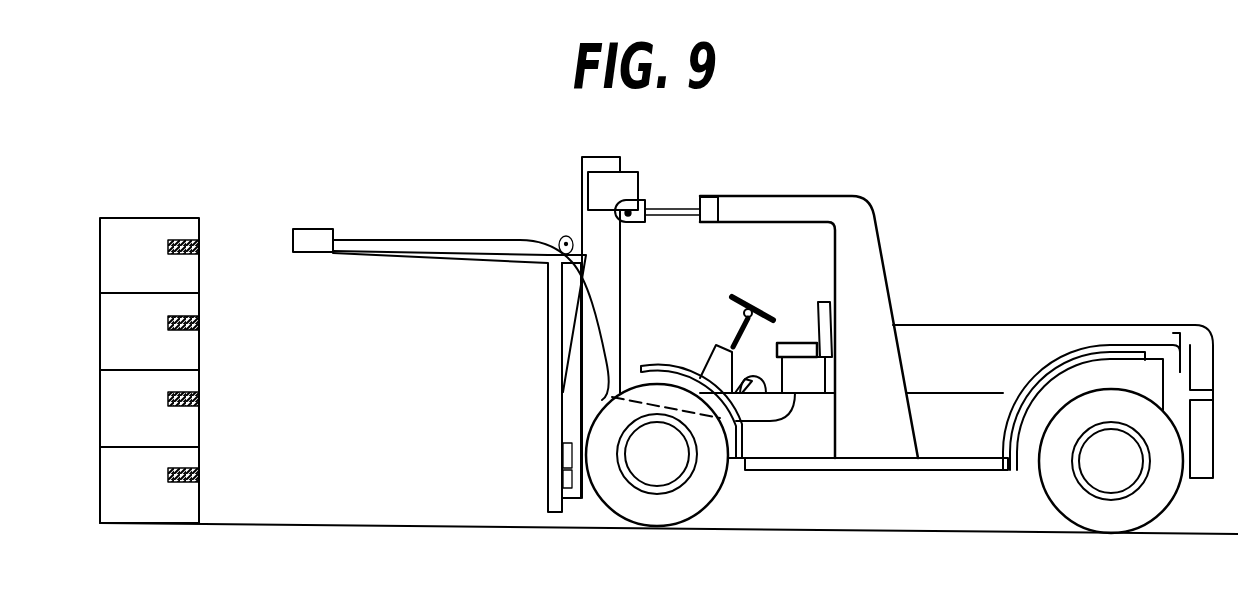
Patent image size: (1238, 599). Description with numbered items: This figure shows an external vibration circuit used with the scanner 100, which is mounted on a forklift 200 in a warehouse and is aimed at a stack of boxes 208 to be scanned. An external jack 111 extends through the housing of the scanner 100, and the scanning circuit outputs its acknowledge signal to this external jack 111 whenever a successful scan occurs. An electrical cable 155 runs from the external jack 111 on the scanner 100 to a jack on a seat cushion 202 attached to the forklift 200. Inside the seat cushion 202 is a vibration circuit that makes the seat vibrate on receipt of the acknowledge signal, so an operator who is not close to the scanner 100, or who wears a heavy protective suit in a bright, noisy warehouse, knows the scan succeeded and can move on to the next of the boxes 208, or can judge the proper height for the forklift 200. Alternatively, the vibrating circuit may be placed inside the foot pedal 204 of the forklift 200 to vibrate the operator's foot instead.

The scanner 100 is at (306, 228).
The external jack 111 is at (336, 233).
The electrical cable 155 is at (608, 302).
The forklift 200 is at (773, 327).
The seat cushion 202 is at (793, 340).
The foot pedal 204 is at (760, 378).
The boxes 208 is at (157, 212).